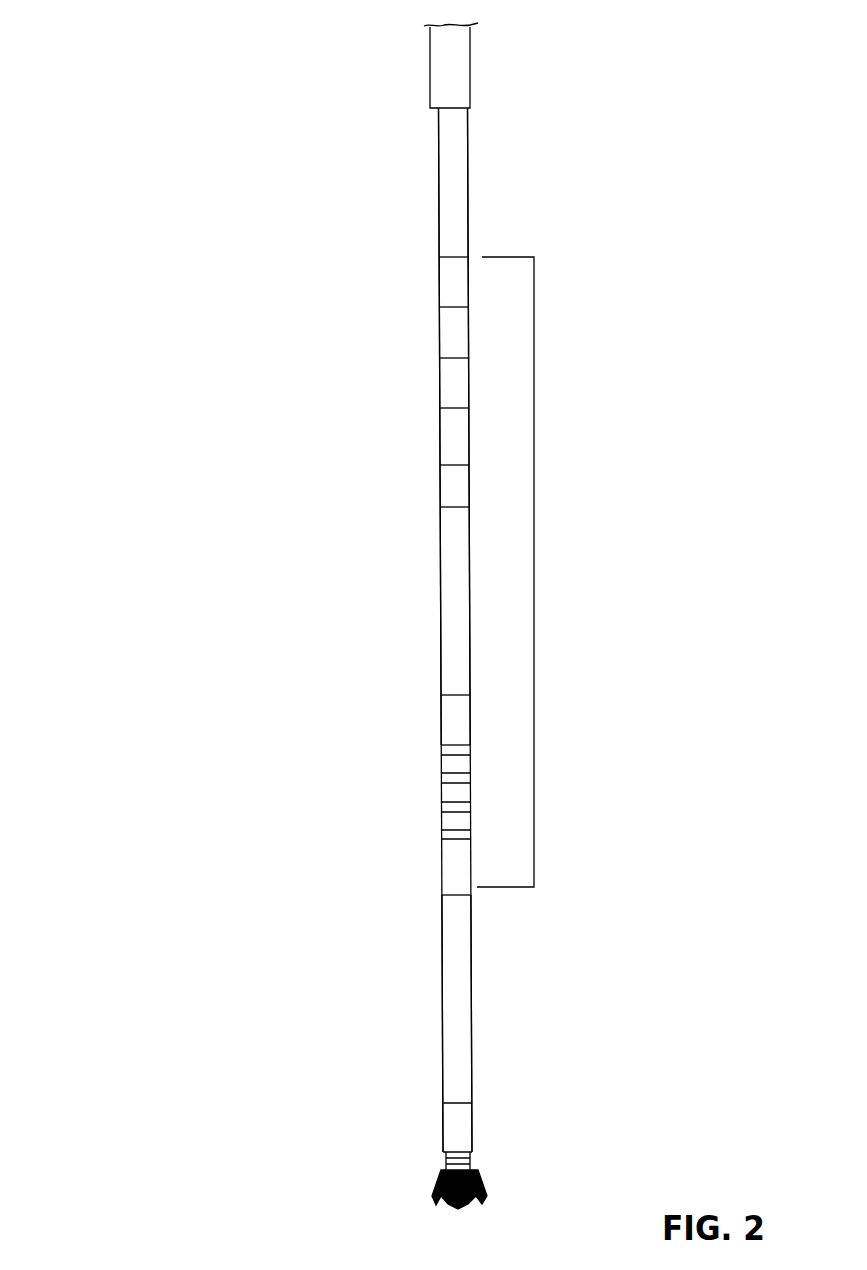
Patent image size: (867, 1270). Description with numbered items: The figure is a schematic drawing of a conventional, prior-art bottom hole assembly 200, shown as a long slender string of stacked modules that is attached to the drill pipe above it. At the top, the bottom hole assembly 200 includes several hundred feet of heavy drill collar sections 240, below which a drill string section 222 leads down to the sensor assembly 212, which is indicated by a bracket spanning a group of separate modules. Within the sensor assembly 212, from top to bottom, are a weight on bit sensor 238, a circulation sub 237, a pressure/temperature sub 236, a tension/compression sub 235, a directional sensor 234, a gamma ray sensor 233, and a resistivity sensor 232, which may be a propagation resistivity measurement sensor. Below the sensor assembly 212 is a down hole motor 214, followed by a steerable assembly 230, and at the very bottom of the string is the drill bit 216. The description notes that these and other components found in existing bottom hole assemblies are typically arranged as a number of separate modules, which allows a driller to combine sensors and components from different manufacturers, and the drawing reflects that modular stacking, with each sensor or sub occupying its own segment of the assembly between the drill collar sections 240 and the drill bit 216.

The bottom hole assembly 200 is at (163, 66).
The heavy drill collar sections 240 is at (430, 62).
The drill string 222 is at (445, 178).
The weight on bit sensor 238 is at (448, 295).
The circulation sub 237 is at (447, 344).
The pressure/temperature sub 236 is at (447, 394).
The tension/compression sub 235 is at (447, 448).
The directional sensor 234 is at (447, 500).
The gamma ray sensor 233 is at (448, 614).
The resistivity sensor 232 is at (449, 732).
The sensor assembly 212 is at (534, 571).
The down hole motor 214 is at (450, 1033).
The steerable assembly 230 is at (450, 1136).
The drill bit 216 is at (440, 1193).